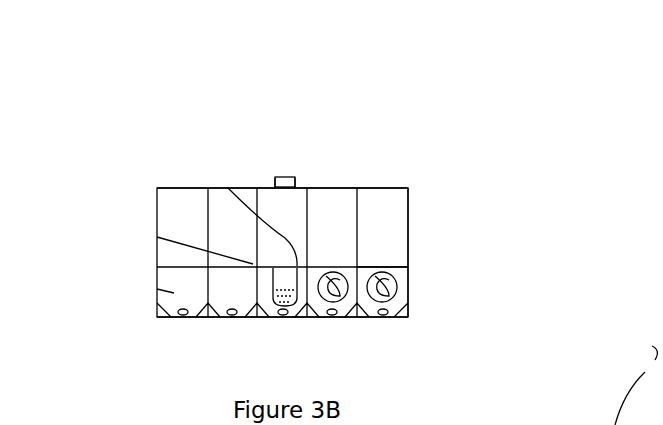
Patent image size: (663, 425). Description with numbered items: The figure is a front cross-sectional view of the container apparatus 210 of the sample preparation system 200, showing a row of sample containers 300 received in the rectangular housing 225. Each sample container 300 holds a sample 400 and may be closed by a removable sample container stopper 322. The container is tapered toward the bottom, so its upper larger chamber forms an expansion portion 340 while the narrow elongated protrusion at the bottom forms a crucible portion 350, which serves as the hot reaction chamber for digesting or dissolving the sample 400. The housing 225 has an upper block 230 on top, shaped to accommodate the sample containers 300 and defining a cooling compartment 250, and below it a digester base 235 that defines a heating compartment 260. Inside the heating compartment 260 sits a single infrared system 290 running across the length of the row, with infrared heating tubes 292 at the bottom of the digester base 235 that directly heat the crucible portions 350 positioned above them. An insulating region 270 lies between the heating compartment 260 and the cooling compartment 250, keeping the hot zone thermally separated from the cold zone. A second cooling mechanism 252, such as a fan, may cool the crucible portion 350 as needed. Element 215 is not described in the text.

The sample preparation system 200 is at (189, 85).
The container apparatus 210 is at (395, 185).
The bottom wall 215 is at (407, 300).
The housing 225 is at (407, 198).
The upper block 230 is at (405, 224).
The digester base 235 is at (405, 274).
The cooling compartment 250 is at (405, 248).
The second cooling mechanism 252 is at (335, 301).
The heating compartment 260 is at (157, 289).
The insulating region 270 is at (228, 188).
The infrared system 290 is at (235, 318).
The infrared heating tube 292 is at (295, 318).
The sample container 300 is at (275, 178).
The sample container stopper 322 is at (285, 176).
The expansion portion 340 is at (297, 178).
The crucible portion 350 is at (157, 237).
The sample 400 is at (273, 292).